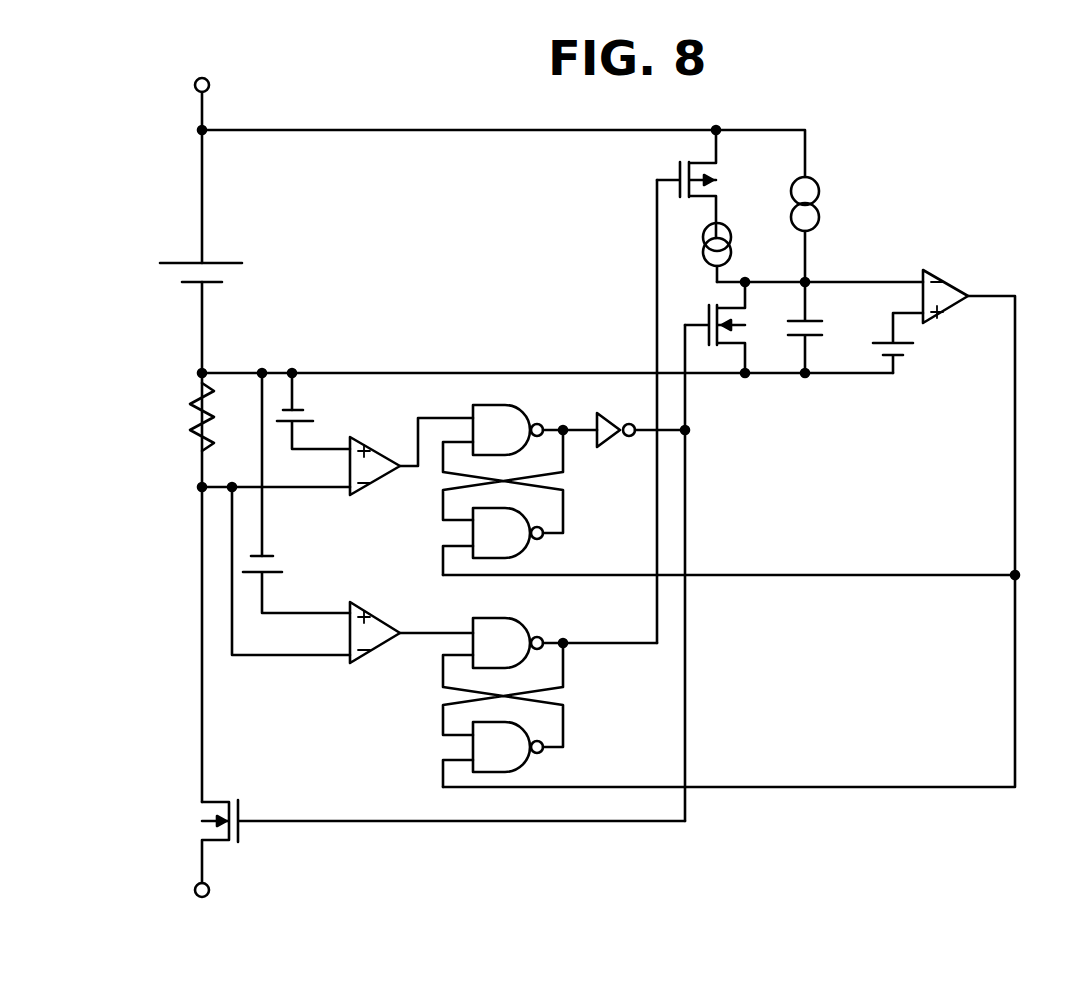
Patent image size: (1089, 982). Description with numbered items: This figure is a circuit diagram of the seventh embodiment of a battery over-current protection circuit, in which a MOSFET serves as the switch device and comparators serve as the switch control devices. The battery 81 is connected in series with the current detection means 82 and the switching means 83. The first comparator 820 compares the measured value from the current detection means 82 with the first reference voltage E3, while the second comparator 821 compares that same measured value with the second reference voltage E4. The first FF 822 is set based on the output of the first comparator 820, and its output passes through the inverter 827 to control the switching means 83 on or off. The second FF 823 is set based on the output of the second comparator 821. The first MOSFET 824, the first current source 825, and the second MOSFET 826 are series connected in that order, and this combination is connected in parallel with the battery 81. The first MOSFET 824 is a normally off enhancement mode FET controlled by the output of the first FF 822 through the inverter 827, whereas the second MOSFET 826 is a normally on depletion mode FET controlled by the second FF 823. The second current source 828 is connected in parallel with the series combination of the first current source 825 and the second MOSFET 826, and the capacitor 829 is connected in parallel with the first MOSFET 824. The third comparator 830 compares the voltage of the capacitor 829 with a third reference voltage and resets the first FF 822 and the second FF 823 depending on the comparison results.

The battery 81 is at (182, 272).
The current detection means 82 is at (188, 418).
The switching means 83 is at (200, 825).
The first reference voltage E3 is at (315, 424).
The second reference voltage E4 is at (296, 581).
The first comparator 820 is at (372, 483).
The second comparator 821 is at (373, 650).
The first FF 822 is at (565, 478).
The second FF 823 is at (565, 693).
The first MOSFET 824 is at (695, 312).
The first current source 825 is at (698, 242).
The second MOSFET 826 is at (670, 167).
The inverter 827 is at (597, 413).
The second current source 828 is at (822, 203).
The capacitor 829 is at (818, 330).
The third comparator 830 is at (950, 285).